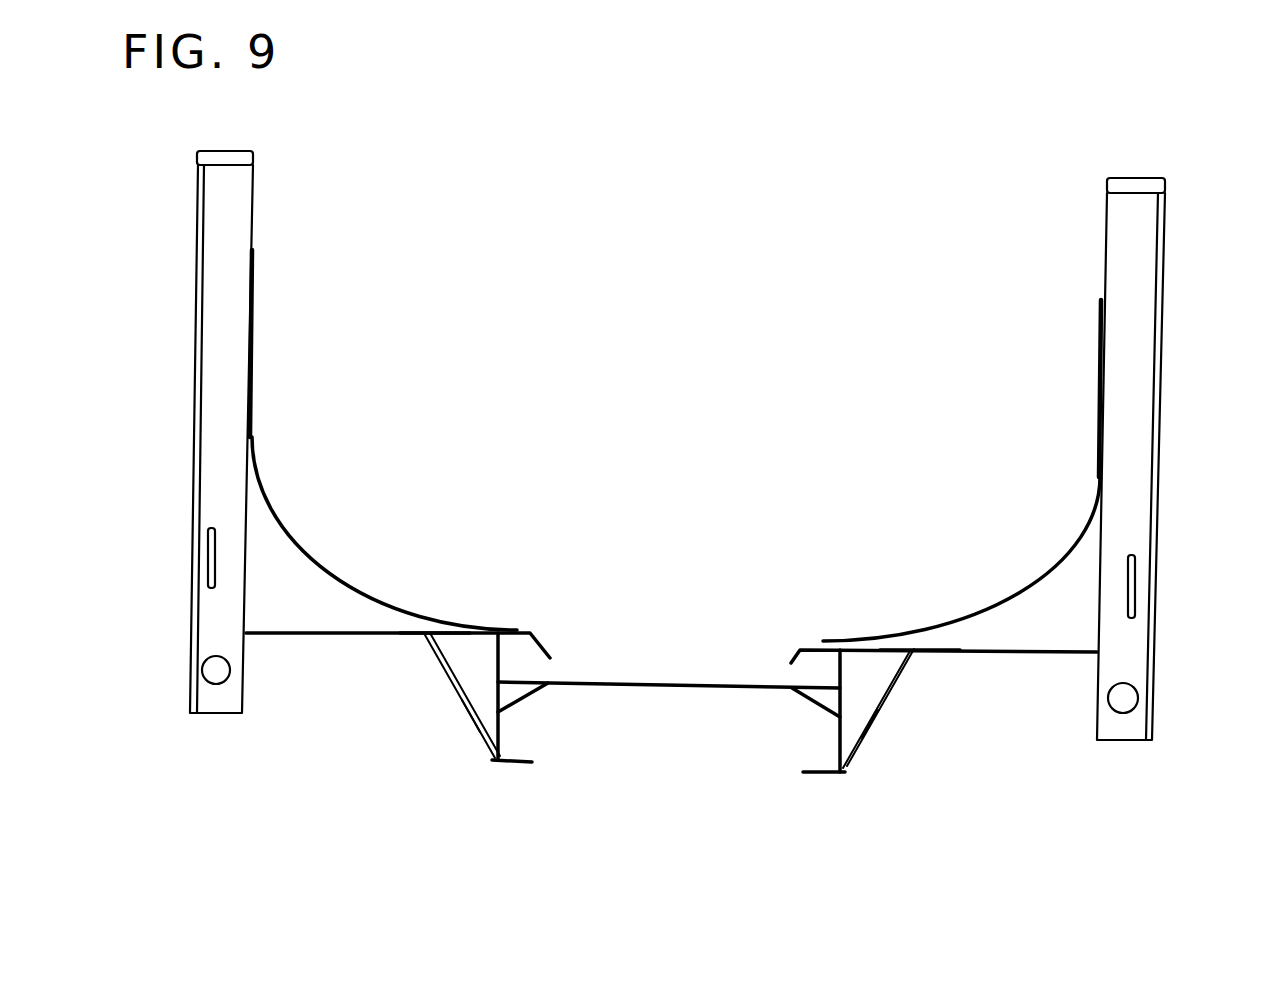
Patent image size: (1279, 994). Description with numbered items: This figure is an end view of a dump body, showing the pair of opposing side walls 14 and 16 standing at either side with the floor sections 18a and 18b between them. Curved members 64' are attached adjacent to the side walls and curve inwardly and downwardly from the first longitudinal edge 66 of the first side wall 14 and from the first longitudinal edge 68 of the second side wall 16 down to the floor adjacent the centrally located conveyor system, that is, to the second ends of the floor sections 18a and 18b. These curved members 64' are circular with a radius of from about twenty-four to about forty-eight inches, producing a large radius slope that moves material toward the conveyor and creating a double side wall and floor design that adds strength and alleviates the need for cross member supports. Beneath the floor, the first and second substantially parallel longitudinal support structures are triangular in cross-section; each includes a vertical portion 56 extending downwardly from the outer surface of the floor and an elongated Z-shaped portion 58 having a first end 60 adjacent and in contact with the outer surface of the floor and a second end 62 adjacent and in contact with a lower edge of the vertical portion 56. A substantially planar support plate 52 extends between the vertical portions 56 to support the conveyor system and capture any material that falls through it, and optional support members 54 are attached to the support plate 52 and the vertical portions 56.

The first side wall 14 is at (197, 371).
The second side wall 16 is at (1160, 380).
The floor section 18a is at (287, 636).
The floor section 18b is at (1047, 653).
The substantially planar support plate 52 is at (617, 682).
The support member 54 is at (542, 698).
The vertical portion 56 is at (497, 660).
The Z-shaped portion 58 is at (455, 693).
The first end 60 is at (420, 636).
The second end 62 is at (512, 765).
The curved member 64' is at (676, 538).
The first longitudinal edge 66 is at (253, 282).
The first longitudinal edge 68 is at (1100, 312).